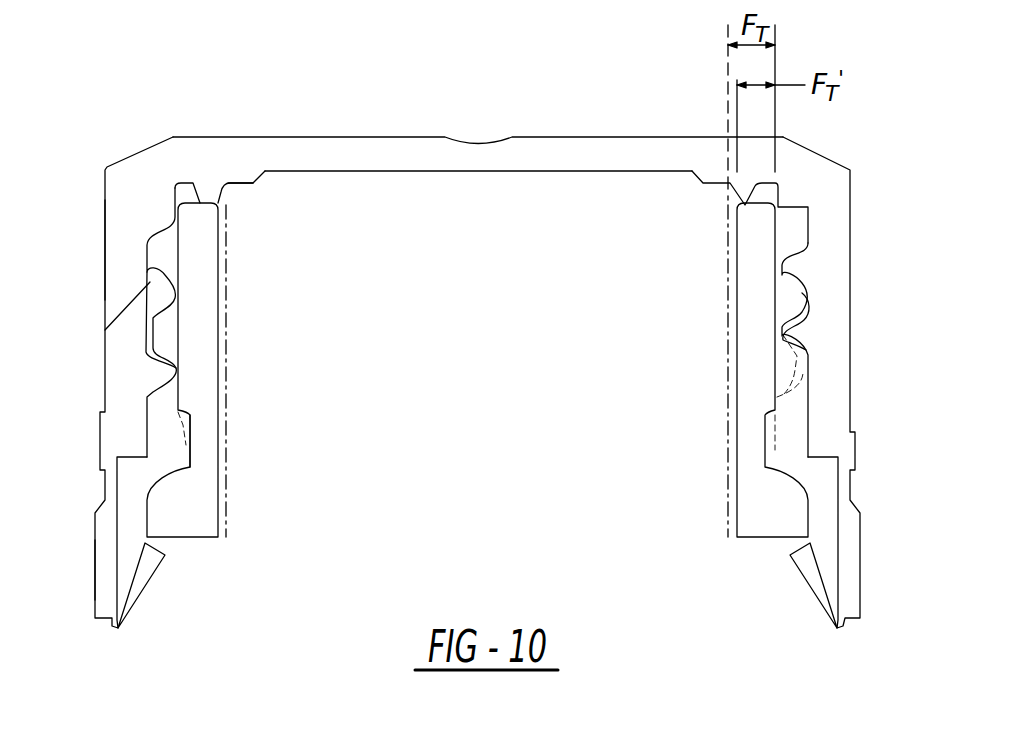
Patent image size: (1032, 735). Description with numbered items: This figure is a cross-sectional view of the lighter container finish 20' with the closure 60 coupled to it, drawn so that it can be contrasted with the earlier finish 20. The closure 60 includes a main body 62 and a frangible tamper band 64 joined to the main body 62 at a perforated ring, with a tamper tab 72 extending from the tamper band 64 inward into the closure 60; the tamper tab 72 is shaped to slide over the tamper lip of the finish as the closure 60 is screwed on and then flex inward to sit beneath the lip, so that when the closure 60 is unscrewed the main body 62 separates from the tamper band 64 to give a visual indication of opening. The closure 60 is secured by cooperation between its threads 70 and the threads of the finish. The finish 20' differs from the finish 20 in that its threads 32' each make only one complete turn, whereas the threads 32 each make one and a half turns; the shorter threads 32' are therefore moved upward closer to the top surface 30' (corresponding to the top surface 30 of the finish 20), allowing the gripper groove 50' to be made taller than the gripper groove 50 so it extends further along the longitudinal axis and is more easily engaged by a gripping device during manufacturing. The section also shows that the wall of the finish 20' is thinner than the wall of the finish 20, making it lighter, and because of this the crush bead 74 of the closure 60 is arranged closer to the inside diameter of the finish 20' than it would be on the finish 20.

The closure 60 is at (123, 192).
The main body 62 is at (105, 263).
The threads 70 is at (105, 330).
The frangible tamper band 64 is at (95, 577).
The tamper tab 72 is at (158, 572).
The crush bead 74 is at (213, 200).
The finish 20 is at (242, 370).
The finish 20' is at (150, 121).
The top surface 30 is at (278, 134).
The top surface 30' is at (175, 233).
The gripper groove 50 is at (118, 425).
The gripper groove 50' is at (267, 413).
The threads 32 is at (820, 370).
The threads 32' is at (844, 336).